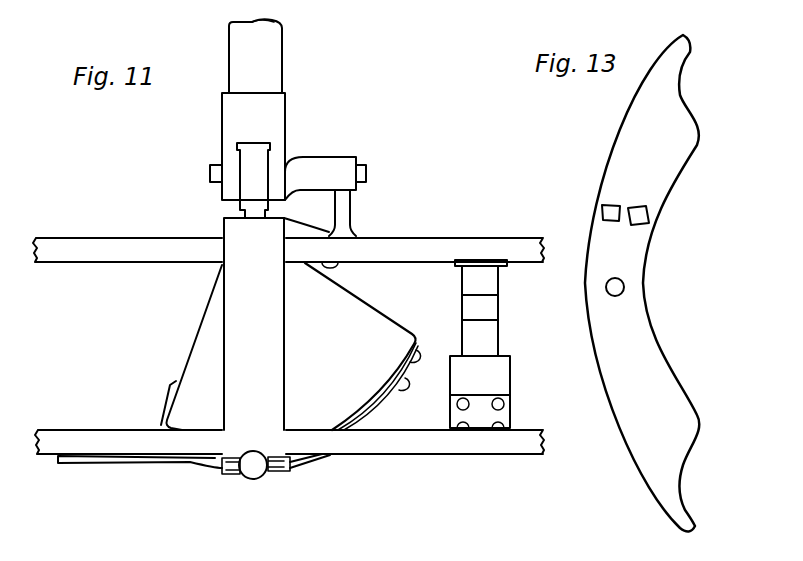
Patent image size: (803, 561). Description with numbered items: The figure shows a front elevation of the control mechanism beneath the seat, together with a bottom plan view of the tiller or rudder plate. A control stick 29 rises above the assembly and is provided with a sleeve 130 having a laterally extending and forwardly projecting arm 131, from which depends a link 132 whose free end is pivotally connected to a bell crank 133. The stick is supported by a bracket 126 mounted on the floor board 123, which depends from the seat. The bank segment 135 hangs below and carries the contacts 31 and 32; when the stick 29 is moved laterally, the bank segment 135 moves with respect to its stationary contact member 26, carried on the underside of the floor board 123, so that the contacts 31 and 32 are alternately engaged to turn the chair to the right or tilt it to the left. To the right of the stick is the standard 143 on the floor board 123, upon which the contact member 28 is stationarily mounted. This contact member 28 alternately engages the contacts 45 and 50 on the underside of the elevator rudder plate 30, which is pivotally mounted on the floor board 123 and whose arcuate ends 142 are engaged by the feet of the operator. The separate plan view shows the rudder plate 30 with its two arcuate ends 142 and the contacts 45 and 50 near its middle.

In FIG. 11, the control stick 29 is at (282, 58).
In FIG. 11, the sleeve 130 is at (282, 112).
In FIG. 11, the arm 131 is at (331, 164).
In FIG. 11, the link 132 is at (348, 210).
In FIG. 11, the bell crank 133 is at (318, 226).
In FIG. 11, the bracket 126 is at (272, 346).
In FIG. 11, the bank segment 135 is at (364, 306).
In FIG. 11, the contact 31 is at (336, 428).
In FIG. 11, the contact 32 is at (166, 405).
In FIG. 11, the contact member 26 is at (184, 464).
In FIG. 11, the elevator rudder plate 30 is at (419, 250).
In FIG. 13, the elevator rudder plate 30 is at (639, 306).
In FIG. 11, the floor board 123 is at (394, 445).
In FIG. 11, the contact 45 is at (486, 260).
In FIG. 13, the contact 45 is at (604, 206).
In FIG. 11, the contact member 28 is at (465, 282).
In FIG. 11, the standard 143 is at (490, 370).
In FIG. 13, the arcuate end 142 is at (684, 86).
In FIG. 13, the contact 50 is at (650, 215).